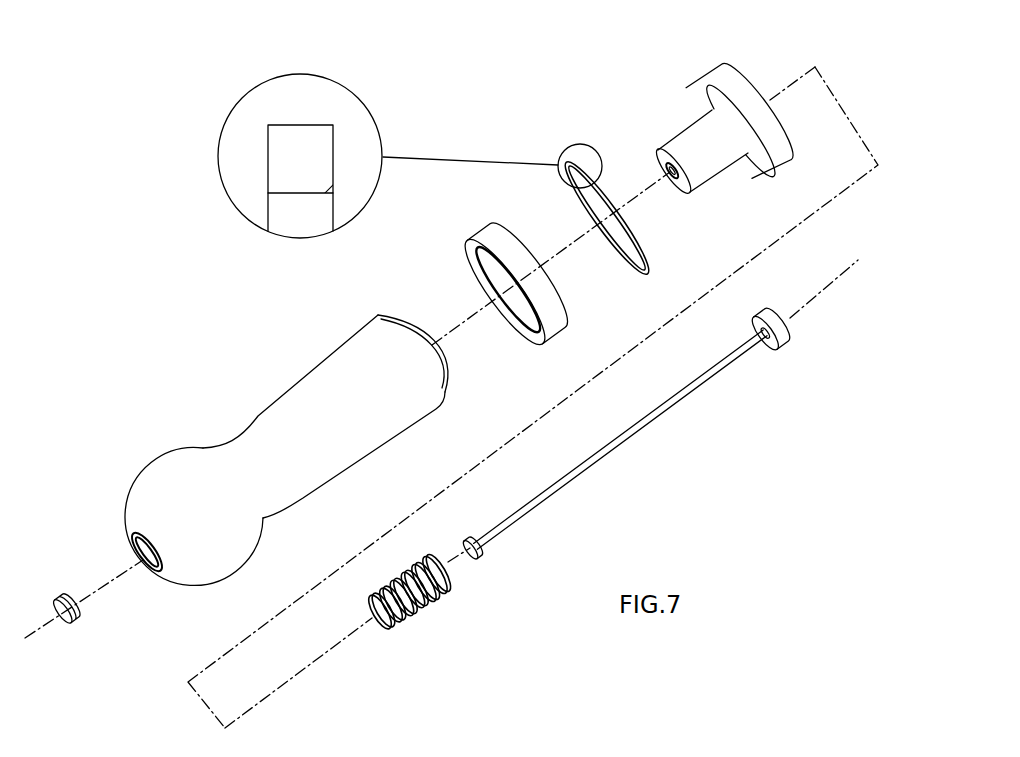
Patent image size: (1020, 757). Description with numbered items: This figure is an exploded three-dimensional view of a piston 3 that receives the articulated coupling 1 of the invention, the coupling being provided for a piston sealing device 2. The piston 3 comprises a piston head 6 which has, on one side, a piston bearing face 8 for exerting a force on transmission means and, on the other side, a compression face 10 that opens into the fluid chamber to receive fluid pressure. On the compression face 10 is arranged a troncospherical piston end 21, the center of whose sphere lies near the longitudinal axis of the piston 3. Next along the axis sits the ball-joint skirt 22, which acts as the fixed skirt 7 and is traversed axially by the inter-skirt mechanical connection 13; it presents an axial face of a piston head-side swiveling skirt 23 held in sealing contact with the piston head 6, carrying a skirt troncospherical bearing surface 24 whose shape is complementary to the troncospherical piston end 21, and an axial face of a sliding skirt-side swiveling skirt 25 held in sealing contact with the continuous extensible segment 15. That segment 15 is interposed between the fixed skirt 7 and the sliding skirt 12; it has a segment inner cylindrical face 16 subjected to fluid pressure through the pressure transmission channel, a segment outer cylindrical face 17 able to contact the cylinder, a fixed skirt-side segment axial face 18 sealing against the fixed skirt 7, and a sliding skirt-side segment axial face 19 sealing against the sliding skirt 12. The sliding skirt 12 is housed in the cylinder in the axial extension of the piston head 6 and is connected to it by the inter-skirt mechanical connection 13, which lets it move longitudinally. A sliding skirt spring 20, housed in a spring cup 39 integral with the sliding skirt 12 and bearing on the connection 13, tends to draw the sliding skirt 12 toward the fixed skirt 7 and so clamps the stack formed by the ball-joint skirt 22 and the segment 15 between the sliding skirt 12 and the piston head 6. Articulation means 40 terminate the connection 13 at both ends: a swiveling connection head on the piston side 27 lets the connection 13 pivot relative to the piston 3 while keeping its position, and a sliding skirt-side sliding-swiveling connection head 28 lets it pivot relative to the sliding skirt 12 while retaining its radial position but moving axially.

The articulated coupling 1 is at (413, 283).
The piston sealing device 2 is at (625, 107).
The piston 3 is at (265, 442).
The piston head 6 is at (307, 402).
The fixed skirt 7 is at (490, 235).
The piston bearing face 8 is at (160, 500).
The compression face 10 is at (443, 362).
The sliding skirt 12 is at (712, 78).
The inter-skirt mechanical connection 13 is at (600, 453).
The continuous extensible segment 15 is at (642, 258).
The segment inner cylindrical face 16 is at (300, 197).
The segment outer cylindrical face 17 is at (300, 125).
The fixed skirt-side segment axial face 18 is at (265, 165).
The sliding skirt-side segment axial face 19 is at (337, 143).
The sliding skirt spring 20 is at (427, 617).
The troncospherical piston end 21 is at (445, 388).
The ball-joint skirt 22 is at (556, 337).
The axial face of piston head-side swiveling skirt 23 is at (473, 285).
The skirt troncospherical bearing surface 24 is at (523, 332).
The axial face of sliding skirt-side swiveling skirt 25 is at (531, 232).
The swiveling connection head on the piston side 27 is at (82, 613).
The sliding skirt-side sliding-swiveling connection head 28 is at (792, 343).
The spring cup 39 is at (705, 168).
The articulation means 40 is at (60, 580).